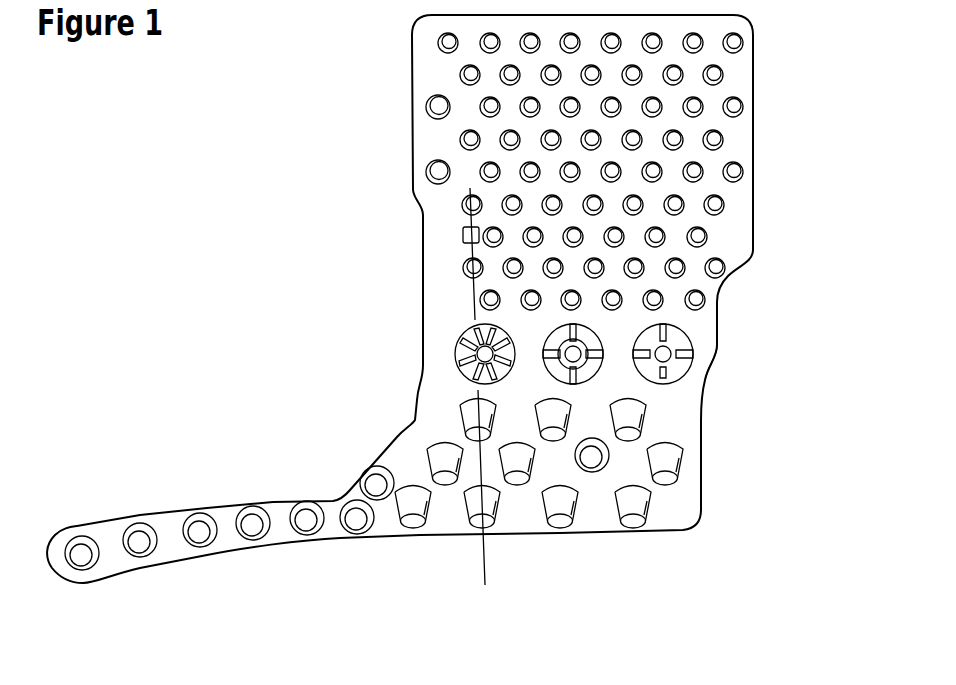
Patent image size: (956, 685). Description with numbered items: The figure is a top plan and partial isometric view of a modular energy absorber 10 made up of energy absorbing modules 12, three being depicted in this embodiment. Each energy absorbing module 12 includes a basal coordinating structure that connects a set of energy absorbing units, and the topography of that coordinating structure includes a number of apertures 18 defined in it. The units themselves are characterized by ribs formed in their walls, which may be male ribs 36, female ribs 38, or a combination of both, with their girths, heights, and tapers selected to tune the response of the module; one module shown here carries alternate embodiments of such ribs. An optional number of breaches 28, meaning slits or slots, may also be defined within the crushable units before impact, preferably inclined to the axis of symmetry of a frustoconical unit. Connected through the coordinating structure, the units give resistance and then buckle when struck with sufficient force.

The modular energy absorber 10 is at (368, 87).
The energy absorbing module 12 is at (737, 222).
The aperture 18 is at (462, 236).
The breach 28 is at (700, 369).
The male rib 36 is at (567, 380).
The female rib 38 is at (465, 337).